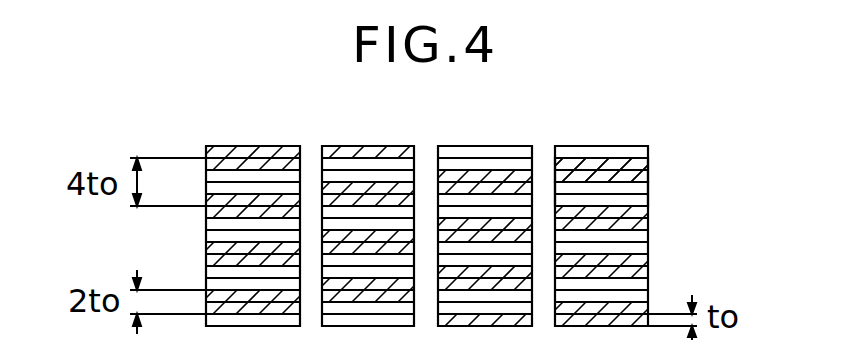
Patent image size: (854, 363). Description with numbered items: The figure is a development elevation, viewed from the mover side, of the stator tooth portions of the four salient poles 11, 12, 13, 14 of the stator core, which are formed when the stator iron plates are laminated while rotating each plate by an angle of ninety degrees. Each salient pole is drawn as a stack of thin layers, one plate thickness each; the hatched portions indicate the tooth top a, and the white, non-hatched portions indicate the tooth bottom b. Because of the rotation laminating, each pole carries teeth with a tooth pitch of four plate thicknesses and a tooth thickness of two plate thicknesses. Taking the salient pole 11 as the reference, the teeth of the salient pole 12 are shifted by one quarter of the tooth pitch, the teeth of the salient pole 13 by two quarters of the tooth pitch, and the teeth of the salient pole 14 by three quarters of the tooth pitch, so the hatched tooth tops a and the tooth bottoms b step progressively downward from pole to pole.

The salient pole 11 is at (250, 146).
The salient pole 12 is at (363, 146).
The salient pole 13 is at (483, 146).
The salient pole 14 is at (600, 146).
The tooth top a is at (649, 164).
The tooth bottom b is at (649, 186).